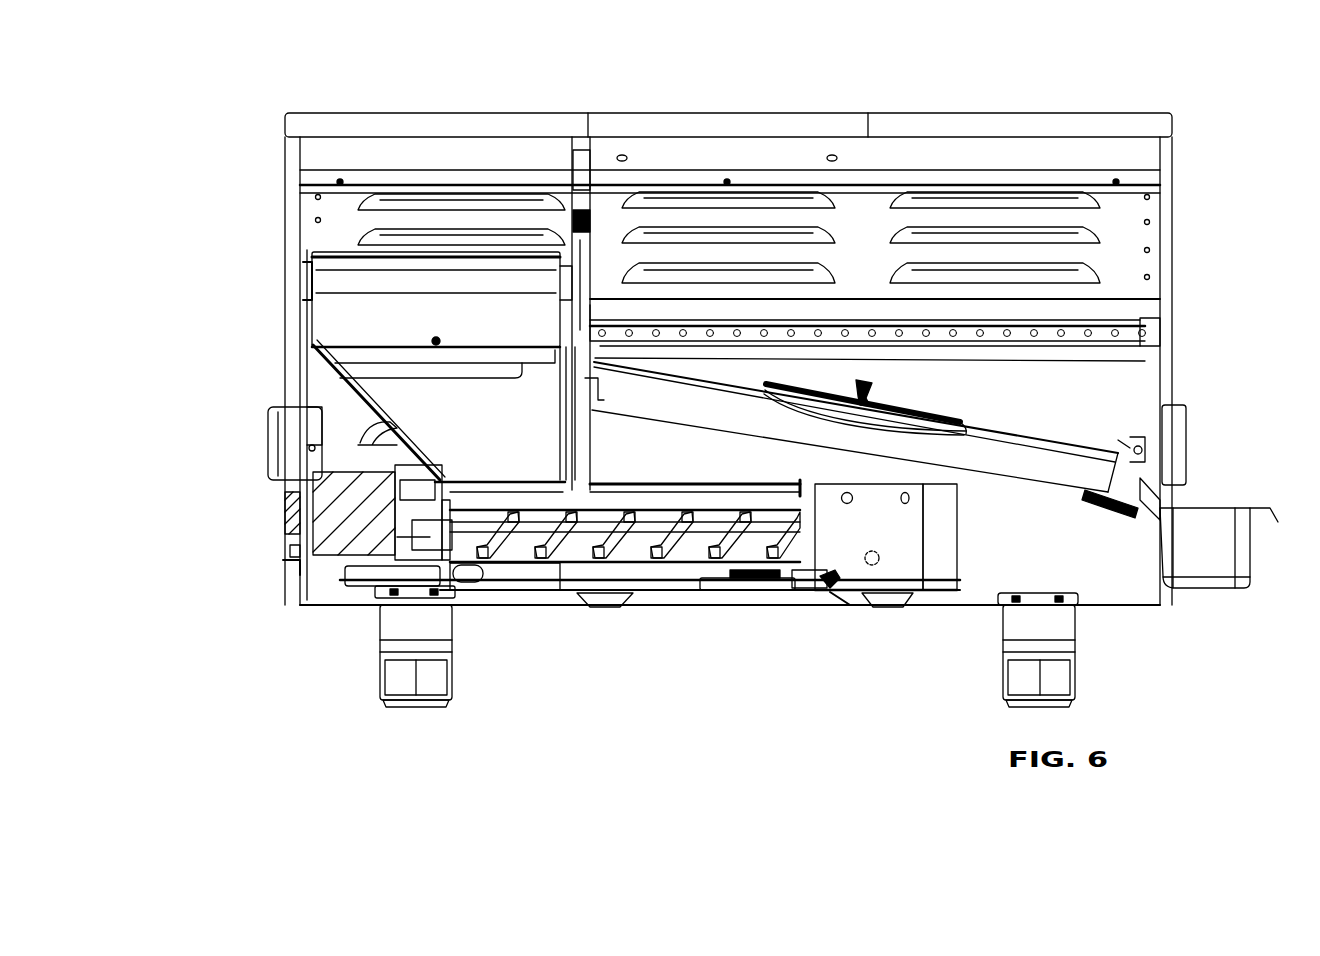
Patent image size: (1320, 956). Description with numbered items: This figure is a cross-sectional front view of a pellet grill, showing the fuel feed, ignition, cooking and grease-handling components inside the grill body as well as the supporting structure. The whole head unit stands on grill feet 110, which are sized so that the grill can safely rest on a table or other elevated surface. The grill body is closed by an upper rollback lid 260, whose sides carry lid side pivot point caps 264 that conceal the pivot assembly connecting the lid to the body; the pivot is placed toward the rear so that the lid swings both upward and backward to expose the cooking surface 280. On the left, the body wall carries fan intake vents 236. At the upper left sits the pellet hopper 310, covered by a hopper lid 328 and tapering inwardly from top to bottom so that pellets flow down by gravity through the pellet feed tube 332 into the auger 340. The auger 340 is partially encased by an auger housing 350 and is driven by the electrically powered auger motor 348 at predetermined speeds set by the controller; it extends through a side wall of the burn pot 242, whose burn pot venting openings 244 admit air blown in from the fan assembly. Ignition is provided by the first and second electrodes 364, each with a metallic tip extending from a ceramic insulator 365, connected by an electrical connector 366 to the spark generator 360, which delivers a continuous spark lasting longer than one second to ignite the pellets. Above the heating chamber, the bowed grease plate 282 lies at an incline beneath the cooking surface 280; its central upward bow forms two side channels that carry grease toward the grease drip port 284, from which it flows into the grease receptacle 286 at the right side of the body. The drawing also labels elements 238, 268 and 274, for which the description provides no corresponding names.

The grill feet 110 is at (455, 686).
The fan intake vents 236 is at (283, 558).
The shield 238 is at (695, 478).
The burn pot 242 is at (916, 521).
The burn pot venting openings 244 is at (880, 552).
The upper rollback lid 260 is at (1178, 121).
The lid side pivot point caps 264 is at (276, 453).
The hinge bracket 268 is at (290, 412).
The handle 274 is at (762, 386).
The cooking surface 280 is at (1145, 318).
The bowed grease plate 282 is at (965, 440).
The grease drip port 284 is at (1095, 510).
The grease receptacle 286 is at (1200, 590).
The pellet hopper 310 is at (368, 392).
The hopper lid 328 is at (312, 252).
The pellet feed tube 332 is at (478, 470).
The auger 340 is at (672, 512).
The auger motor 348 is at (292, 512).
The auger housing 350 is at (562, 590).
The spark generator 360 is at (355, 590).
The first and second electrodes 364 is at (850, 598).
The ceramic insulator 365 is at (820, 592).
The electrical connector 366 is at (715, 590).